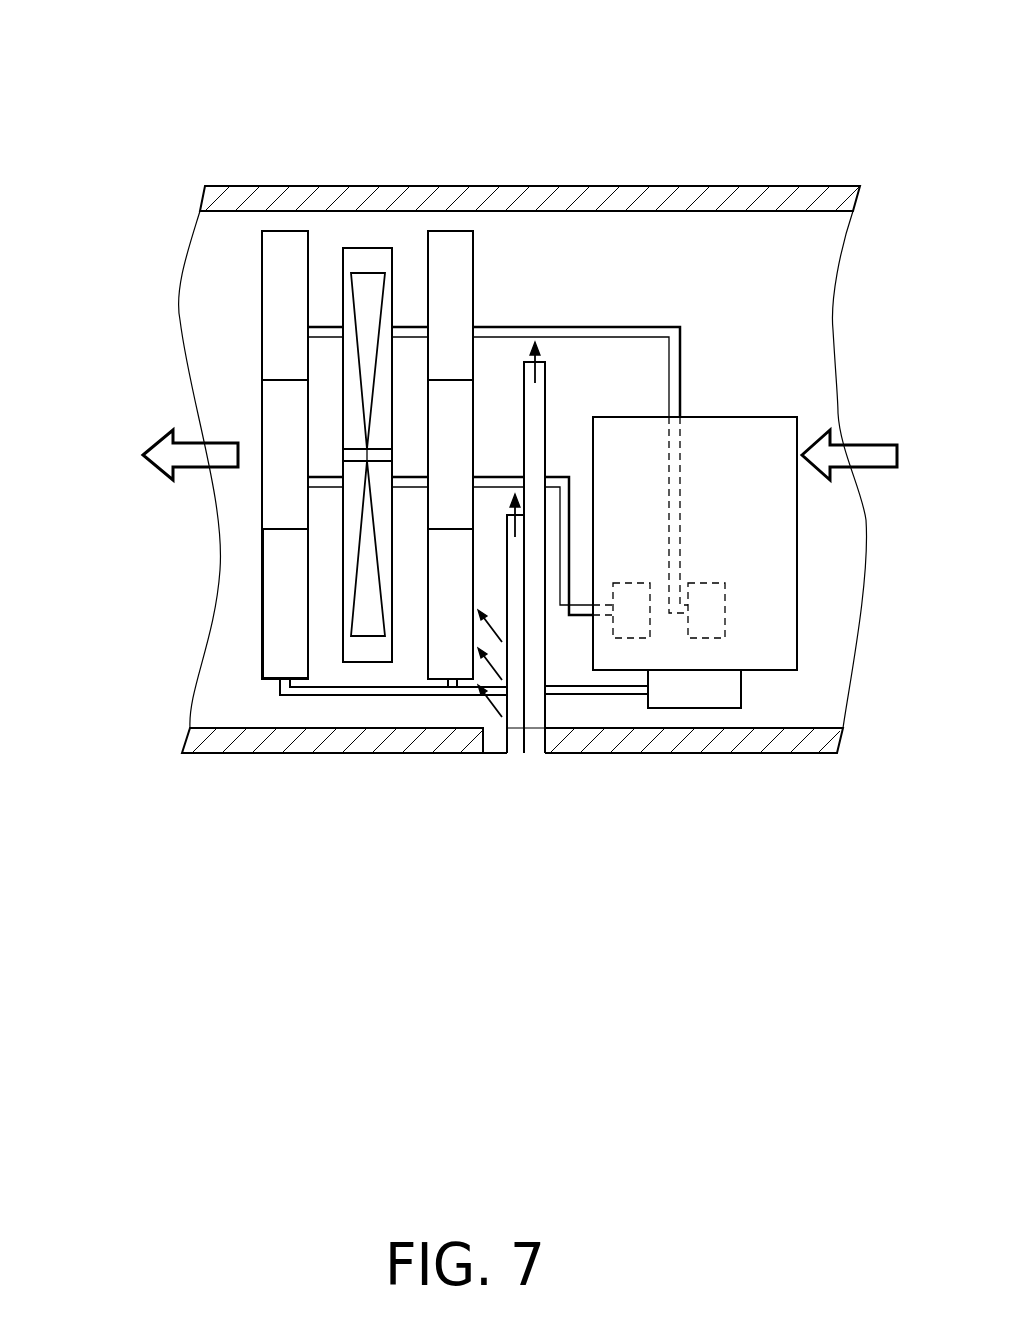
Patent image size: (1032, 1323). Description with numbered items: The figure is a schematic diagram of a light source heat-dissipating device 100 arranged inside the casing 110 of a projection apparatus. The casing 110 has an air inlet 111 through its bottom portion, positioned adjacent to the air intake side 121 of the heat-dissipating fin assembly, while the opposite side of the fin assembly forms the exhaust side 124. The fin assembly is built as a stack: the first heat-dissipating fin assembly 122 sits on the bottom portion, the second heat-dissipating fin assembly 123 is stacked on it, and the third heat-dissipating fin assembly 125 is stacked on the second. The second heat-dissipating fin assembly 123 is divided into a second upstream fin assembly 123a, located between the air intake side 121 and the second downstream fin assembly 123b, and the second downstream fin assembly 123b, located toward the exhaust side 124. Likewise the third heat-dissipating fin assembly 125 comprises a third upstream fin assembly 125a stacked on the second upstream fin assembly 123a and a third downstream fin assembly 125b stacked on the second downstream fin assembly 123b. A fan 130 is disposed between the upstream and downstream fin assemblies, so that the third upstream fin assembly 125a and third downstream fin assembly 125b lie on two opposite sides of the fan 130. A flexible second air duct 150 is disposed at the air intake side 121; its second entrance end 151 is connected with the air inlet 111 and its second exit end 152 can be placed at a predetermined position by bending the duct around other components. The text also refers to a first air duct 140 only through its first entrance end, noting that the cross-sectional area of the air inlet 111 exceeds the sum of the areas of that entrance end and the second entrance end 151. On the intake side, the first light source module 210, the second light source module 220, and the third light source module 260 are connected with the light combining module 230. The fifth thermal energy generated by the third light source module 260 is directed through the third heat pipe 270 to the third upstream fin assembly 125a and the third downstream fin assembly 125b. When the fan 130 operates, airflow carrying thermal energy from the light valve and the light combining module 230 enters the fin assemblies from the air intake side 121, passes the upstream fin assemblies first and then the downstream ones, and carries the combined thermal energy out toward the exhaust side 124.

The light source heat-dissipating device 100 is at (185, 28).
The casing 110 is at (723, 176).
The air inlet 111 is at (490, 757).
The air intake side 121 is at (307, 392).
The first heat-dissipating fin assembly 122 is at (270, 652).
The second heat-dissipating fin assembly 123 is at (92, 287).
The second upstream fin assembly 123a is at (447, 400).
The second downstream fin assembly 123b is at (287, 413).
The exhaust side 124 is at (222, 473).
The third heat-dissipating fin assembly 125 is at (433, 103).
The third upstream fin assembly 125a is at (445, 243).
The third downstream fin assembly 125b is at (287, 243).
The fan 130 is at (362, 663).
The base plate 140 is at (500, 730).
The second air duct 150 is at (553, 721).
The second entrance end 151 is at (532, 735).
The second exit end 152 is at (541, 352).
The first light source module 210 is at (696, 695).
The second light source module 220 is at (630, 627).
The light combining module 230 is at (778, 657).
The third light source module 260 is at (710, 610).
The third heat pipe 270 is at (673, 557).